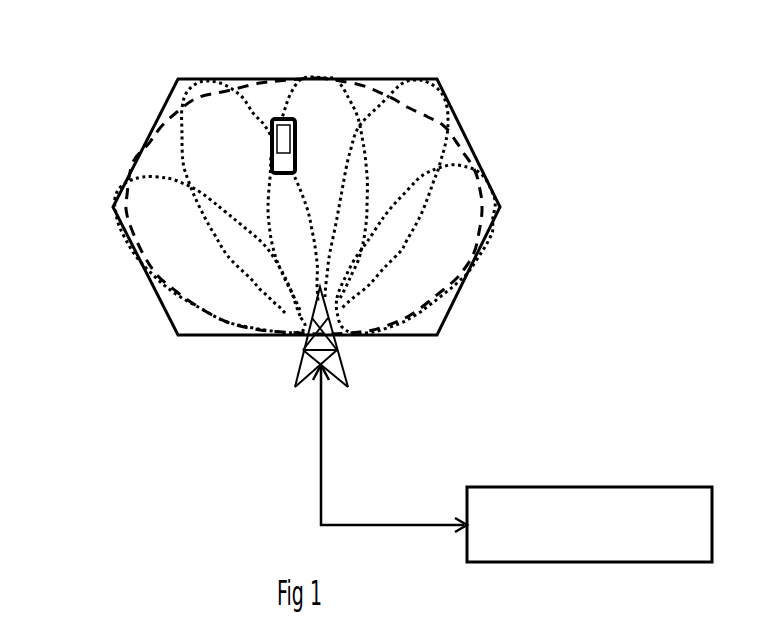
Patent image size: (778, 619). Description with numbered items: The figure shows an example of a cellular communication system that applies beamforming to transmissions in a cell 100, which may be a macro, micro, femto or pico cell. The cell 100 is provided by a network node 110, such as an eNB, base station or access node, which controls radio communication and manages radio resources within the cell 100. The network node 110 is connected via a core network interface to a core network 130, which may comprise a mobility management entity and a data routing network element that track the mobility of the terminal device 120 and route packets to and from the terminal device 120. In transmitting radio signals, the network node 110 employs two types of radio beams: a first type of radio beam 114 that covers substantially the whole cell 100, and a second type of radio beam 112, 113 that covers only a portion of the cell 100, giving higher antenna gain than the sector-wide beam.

The cell 100 is at (380, 79).
The network node 110 is at (313, 312).
The second type of radio beam 112 is at (168, 180).
The second type of radio beam 113 is at (189, 91).
The first type of radio beam 114 is at (457, 142).
The terminal device 120 is at (271, 143).
The core network 130 is at (589, 524).